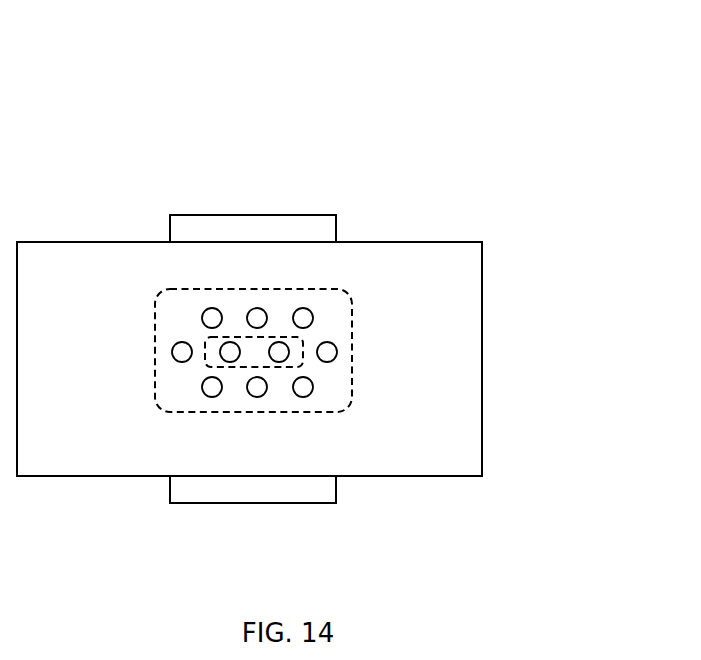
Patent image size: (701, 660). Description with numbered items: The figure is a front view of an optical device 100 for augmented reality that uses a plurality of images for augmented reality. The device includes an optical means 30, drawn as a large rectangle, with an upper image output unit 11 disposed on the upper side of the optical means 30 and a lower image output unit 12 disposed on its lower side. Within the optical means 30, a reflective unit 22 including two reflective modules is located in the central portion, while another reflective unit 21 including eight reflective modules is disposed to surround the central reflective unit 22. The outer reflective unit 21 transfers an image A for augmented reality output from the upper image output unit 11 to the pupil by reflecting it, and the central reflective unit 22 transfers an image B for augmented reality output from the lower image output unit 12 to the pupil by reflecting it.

The optical device for augmented reality 100 is at (405, 117).
The upper image output unit 11 is at (273, 214).
The lower image output unit 12 is at (265, 503).
The reflective unit 21 is at (354, 323).
The reflective unit 22 is at (207, 367).
The optical means 30 is at (482, 358).